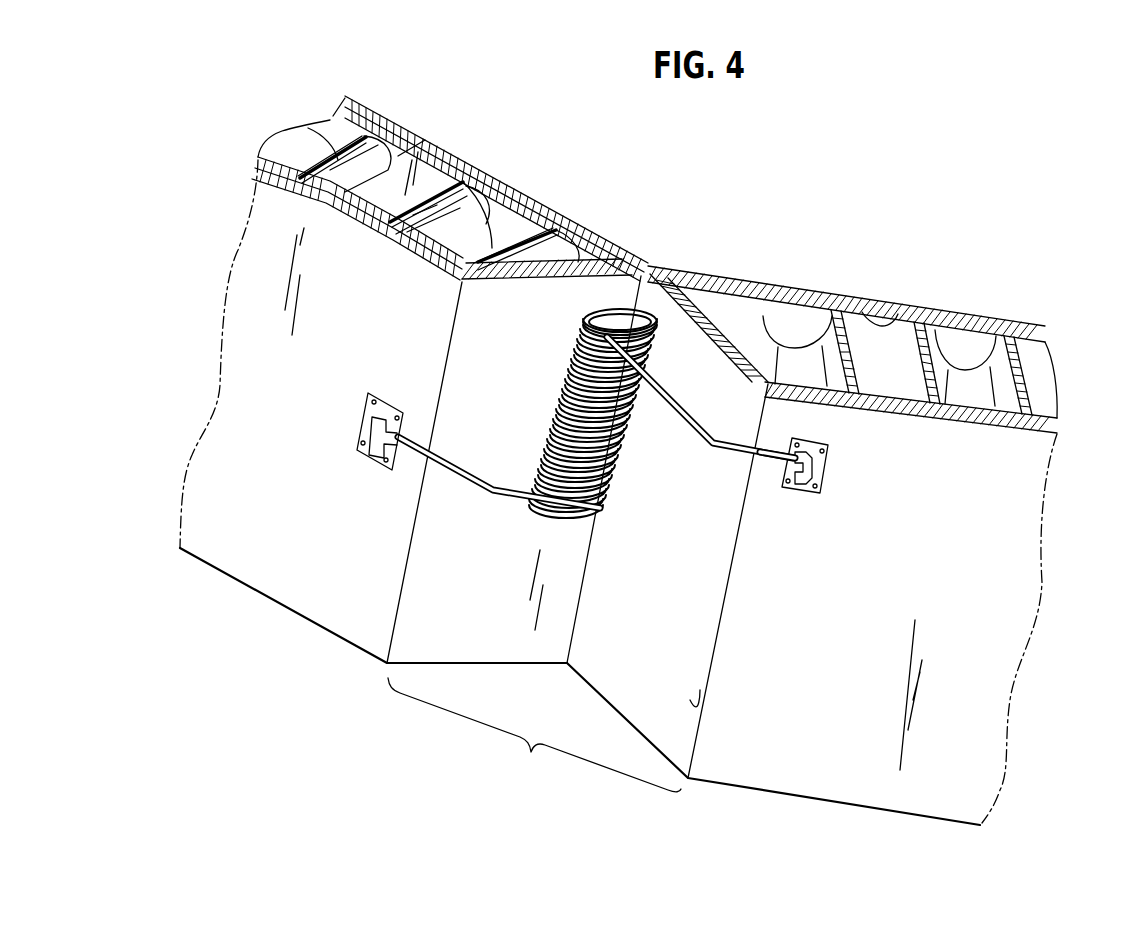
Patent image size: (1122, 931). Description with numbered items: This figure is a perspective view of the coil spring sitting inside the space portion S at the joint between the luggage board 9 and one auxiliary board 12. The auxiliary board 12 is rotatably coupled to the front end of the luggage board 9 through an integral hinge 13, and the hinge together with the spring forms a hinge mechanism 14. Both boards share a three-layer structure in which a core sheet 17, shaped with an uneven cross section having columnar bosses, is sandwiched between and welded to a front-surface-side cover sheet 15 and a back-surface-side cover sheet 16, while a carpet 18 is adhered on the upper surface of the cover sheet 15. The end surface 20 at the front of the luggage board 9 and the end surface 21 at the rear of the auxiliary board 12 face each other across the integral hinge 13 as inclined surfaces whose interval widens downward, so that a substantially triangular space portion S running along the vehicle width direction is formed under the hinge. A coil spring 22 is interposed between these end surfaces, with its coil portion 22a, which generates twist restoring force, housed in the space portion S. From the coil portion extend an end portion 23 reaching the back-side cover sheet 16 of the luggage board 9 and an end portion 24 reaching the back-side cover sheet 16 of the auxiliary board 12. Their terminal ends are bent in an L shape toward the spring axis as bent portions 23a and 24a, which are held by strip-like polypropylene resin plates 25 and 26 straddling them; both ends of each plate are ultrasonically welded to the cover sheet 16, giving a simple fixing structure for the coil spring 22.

The luggage board 9 is at (832, 506).
The auxiliary board 12 is at (240, 517).
The integral hinge 13 is at (630, 297).
The hinge mechanism 14 is at (672, 148).
The cover sheet on front surface side 15 is at (893, 362).
The cover sheet on back surface side 16 is at (993, 402).
The core sheet 17 is at (985, 365).
The carpet 18 is at (812, 291).
The end surface of the luggage board 20 is at (677, 647).
The end surface of the auxiliary board 21 is at (494, 563).
The coil spring 22 is at (573, 384).
The coil portion 22a is at (618, 451).
The end portion 23 is at (777, 458).
The bent portion 23a is at (797, 489).
The end portion 24 is at (338, 422).
The bent portion 24a is at (375, 462).
The resin plate 25 is at (849, 523).
The resin plate 26 is at (354, 428).
The space portion S is at (534, 735).